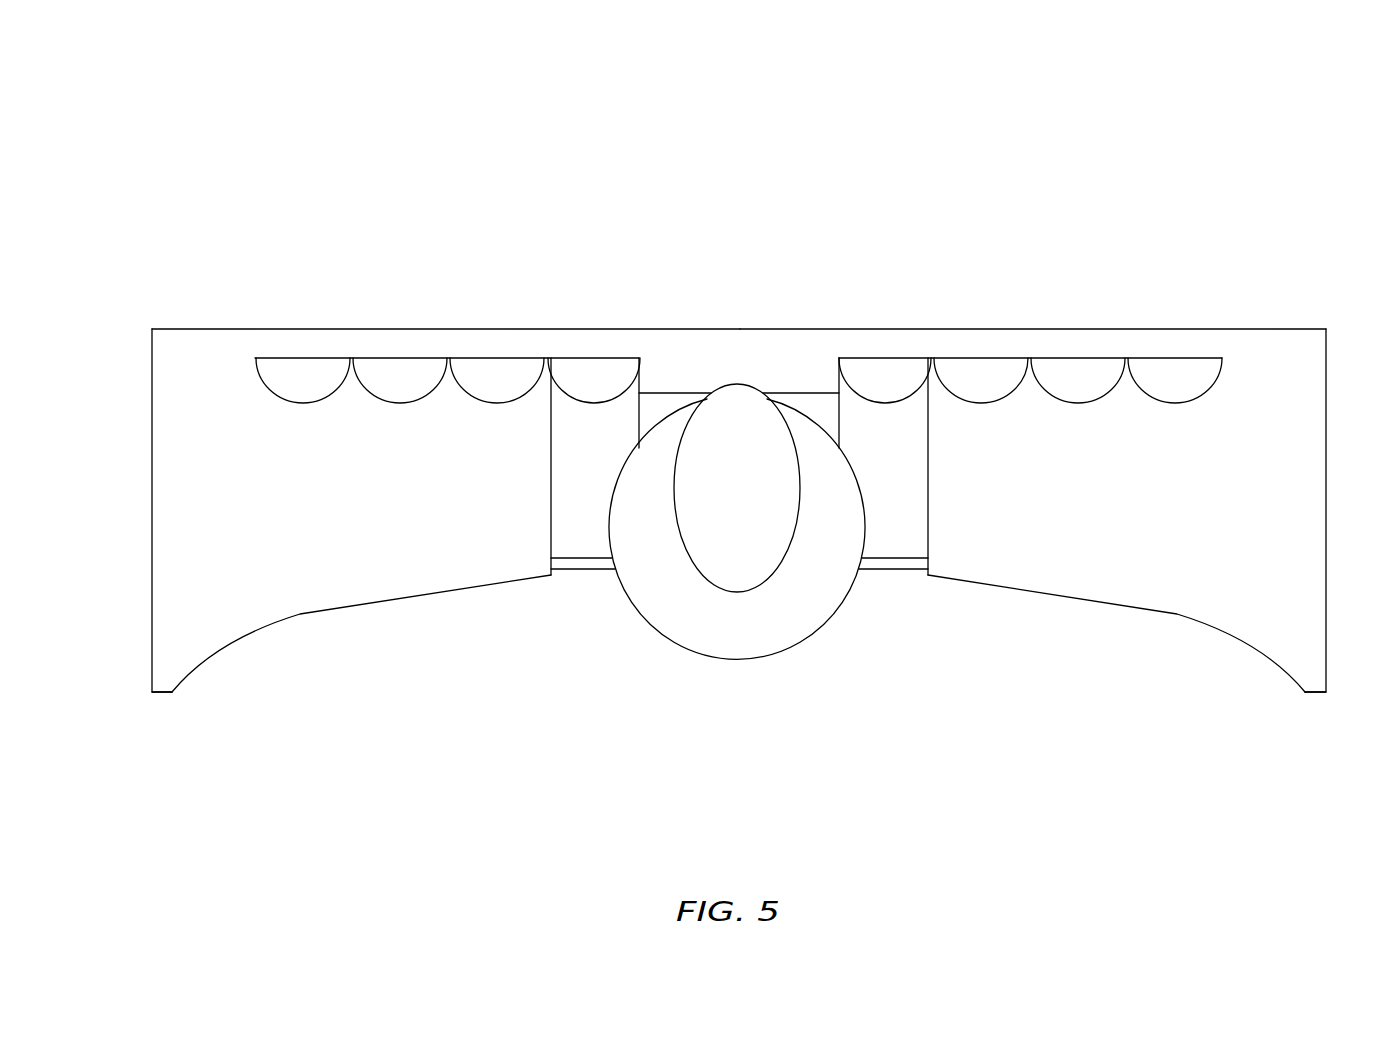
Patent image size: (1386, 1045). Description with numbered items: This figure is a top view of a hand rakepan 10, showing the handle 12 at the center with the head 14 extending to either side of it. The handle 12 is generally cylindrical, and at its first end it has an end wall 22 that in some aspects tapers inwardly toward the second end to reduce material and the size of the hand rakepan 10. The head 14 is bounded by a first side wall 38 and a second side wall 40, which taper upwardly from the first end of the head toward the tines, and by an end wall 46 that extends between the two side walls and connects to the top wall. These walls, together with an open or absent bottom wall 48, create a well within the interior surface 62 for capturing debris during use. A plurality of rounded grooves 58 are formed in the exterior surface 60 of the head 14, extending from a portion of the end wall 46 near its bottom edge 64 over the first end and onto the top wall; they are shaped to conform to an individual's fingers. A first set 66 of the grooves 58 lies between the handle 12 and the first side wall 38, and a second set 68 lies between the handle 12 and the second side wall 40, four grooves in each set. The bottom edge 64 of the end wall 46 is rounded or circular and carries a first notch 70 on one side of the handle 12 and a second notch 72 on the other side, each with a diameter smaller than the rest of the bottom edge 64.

The hand rakepan 10 is at (1233, 98).
The handle 12 is at (738, 709).
The head 14 is at (115, 274).
The end wall 22 is at (774, 597).
The first side wall 38 is at (1326, 478).
The second side wall 40 is at (152, 505).
The end wall 46 is at (1212, 563).
The bottom wall 48 is at (349, 705).
The grooves 58 is at (318, 372).
The exterior surface 60 is at (813, 188).
The interior surface 62 is at (1100, 671).
The bottom edge 64 is at (450, 593).
The first set 66 is at (576, 163).
The second set 68 is at (996, 151).
The first notch 70 is at (593, 572).
The second notch 72 is at (885, 572).